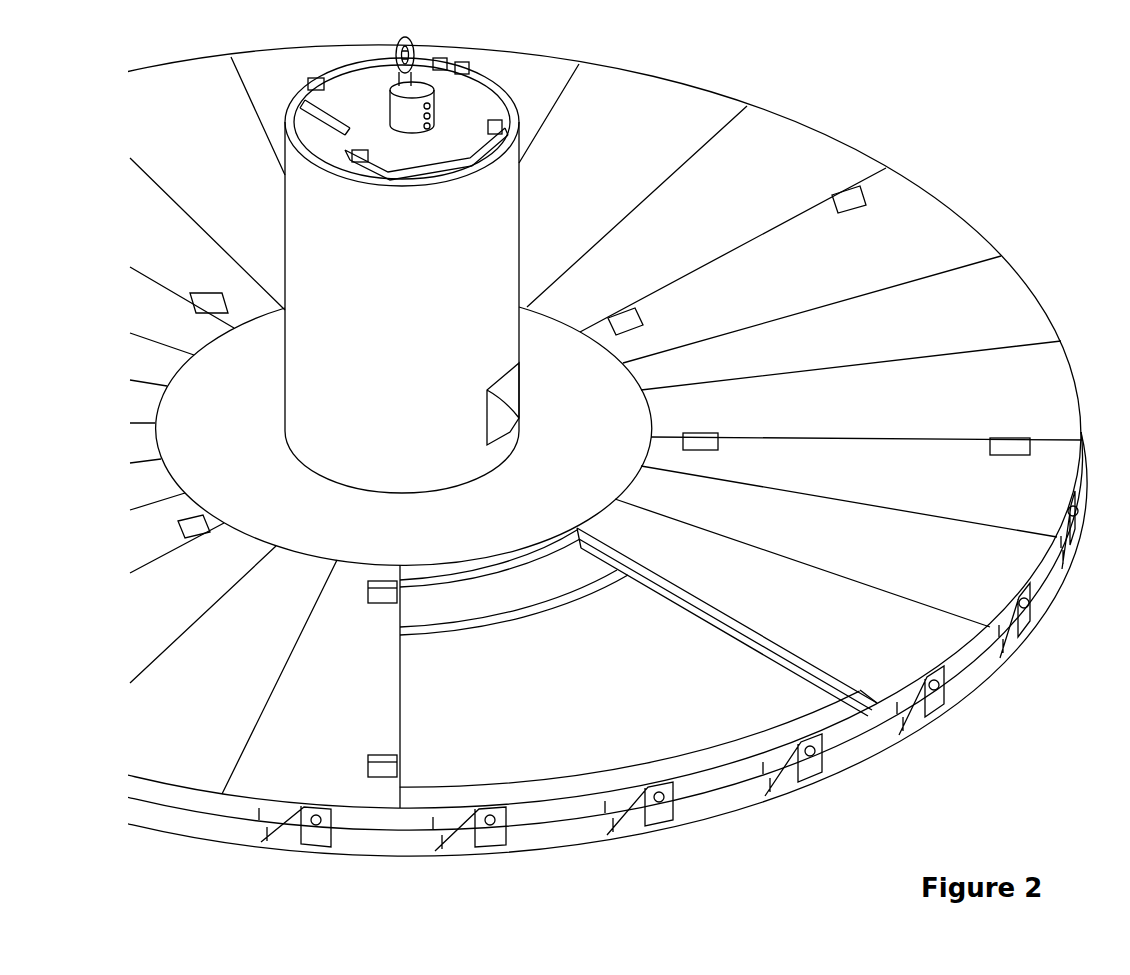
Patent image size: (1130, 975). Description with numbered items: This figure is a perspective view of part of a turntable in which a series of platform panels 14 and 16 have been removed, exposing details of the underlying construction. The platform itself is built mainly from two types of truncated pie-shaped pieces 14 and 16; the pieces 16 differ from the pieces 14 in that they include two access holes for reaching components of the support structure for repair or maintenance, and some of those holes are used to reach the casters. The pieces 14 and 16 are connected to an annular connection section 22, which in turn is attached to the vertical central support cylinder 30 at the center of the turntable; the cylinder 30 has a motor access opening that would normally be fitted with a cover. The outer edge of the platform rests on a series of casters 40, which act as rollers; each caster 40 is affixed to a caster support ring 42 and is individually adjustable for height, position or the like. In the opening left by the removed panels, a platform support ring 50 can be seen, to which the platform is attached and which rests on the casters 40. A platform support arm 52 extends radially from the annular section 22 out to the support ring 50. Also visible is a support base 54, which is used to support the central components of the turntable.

The truncated pie-shaped pieces 14 is at (883, 560).
The truncated pie-shaped pieces 16 is at (917, 493).
The annular connection section 22 is at (502, 526).
The vertical central support cylinder 30 is at (379, 306).
The caster 40 is at (930, 700).
The caster support ring 42 is at (716, 805).
The platform support ring 50 is at (457, 790).
The platform support arm 52 is at (697, 607).
The support base 54 is at (527, 602).